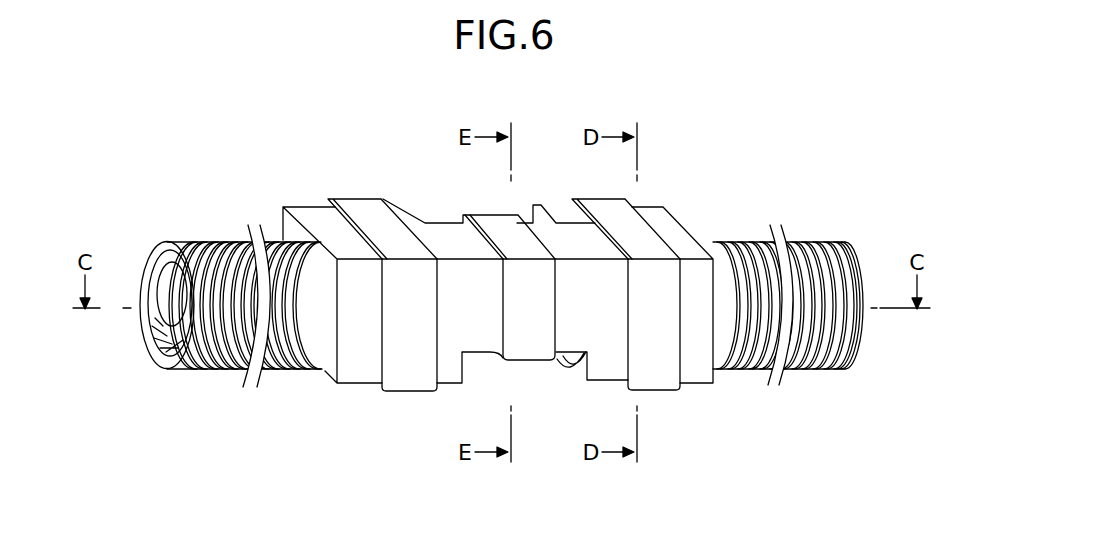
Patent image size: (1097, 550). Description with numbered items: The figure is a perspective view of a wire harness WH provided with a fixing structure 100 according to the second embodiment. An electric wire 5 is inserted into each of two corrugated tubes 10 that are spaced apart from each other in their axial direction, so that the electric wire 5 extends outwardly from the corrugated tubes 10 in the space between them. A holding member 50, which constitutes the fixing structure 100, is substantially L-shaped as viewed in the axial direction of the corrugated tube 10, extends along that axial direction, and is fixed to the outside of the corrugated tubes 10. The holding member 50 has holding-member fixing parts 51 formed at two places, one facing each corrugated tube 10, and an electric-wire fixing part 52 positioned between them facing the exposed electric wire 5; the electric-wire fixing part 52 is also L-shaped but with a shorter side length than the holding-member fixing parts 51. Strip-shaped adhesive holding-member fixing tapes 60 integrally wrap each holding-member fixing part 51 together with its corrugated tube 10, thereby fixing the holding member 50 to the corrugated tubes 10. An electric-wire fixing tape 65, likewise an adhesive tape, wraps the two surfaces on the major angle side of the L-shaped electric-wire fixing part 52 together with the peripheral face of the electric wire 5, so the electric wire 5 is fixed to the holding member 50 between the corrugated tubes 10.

The electric wire 5 is at (170, 303).
The corrugated tube 10 is at (212, 241).
The holding member 50 is at (491, 306).
The holding-member fixing part 51 is at (310, 217).
The electric-wire fixing part 52 is at (445, 237).
The holding-member fixing tape 60 is at (411, 372).
The electric-wire fixing tape 65 is at (528, 343).
The fixing structure 100 is at (501, 306).
The wire harness WH is at (772, 140).